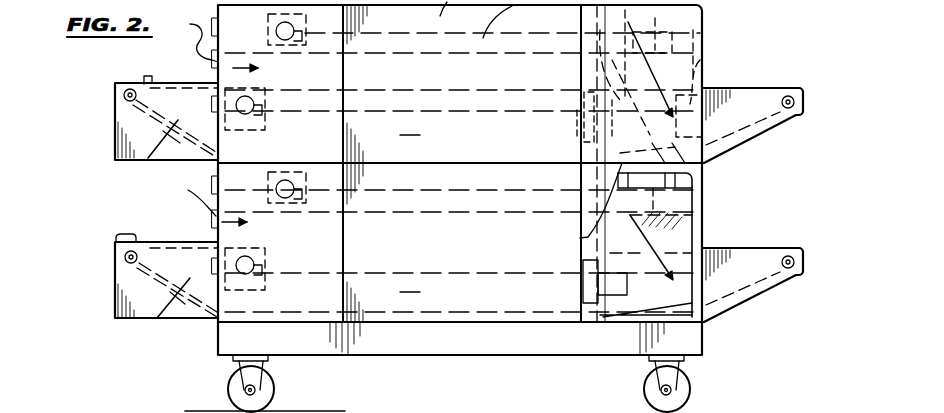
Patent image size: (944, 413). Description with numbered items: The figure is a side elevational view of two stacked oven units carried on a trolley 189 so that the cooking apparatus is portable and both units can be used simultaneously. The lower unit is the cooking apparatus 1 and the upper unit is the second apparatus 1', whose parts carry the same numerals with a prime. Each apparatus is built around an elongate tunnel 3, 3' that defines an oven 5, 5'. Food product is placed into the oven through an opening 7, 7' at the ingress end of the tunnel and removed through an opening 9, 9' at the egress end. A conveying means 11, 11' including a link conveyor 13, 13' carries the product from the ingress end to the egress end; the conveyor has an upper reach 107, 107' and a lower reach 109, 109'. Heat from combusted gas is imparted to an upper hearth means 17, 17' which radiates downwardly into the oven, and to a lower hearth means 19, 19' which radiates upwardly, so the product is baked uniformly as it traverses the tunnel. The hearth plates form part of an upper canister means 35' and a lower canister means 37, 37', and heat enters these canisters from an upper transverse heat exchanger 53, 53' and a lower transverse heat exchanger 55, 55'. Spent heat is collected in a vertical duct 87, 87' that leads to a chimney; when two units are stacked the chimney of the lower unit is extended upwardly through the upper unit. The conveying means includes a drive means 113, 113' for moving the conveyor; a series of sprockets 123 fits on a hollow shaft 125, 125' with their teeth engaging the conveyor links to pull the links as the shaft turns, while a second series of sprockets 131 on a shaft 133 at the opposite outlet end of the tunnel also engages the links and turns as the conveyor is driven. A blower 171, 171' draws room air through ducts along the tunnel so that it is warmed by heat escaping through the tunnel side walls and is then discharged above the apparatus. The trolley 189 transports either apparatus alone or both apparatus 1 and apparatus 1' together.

The cooking apparatus 1 is at (508, 163).
The second cooking apparatus unit 1' is at (798, 208).
The elongate tunnel 3 is at (209, 68).
The elongate tunnel of second unit 3' is at (202, 222).
The oven 5 is at (462, 75).
The oven of second unit 5' is at (462, 245).
The opening at ingress end 7 is at (198, 36).
The ingress opening of second unit 7' is at (194, 196).
The opening at egress end 9 is at (715, 65).
The egress opening of second unit 9' is at (673, 259).
The conveying means 11 is at (766, 125).
The conveying means of second unit 11' is at (768, 285).
The link conveyor 13 is at (783, 73).
The link conveyor of second unit 13' is at (765, 215).
The upper hearth means 17 is at (462, 57).
The upper hearth means of second unit 17' is at (462, 227).
The lower hearth means 19 is at (462, 85).
The lower hearth means of second unit 19' is at (462, 266).
The upper canister means of second unit 35' is at (462, 186).
The lower canister means 37 is at (436, 134).
The lower canister means of second unit 37' is at (440, 296).
The upper transverse heat exchanger 53 is at (295, 22).
The upper transverse heat exchanger of second unit 53' is at (284, 208).
The lower transverse heat exchanger 55 is at (266, 113).
The lower transverse heat exchanger of second unit 55' is at (269, 274).
The vertical duct 87 is at (681, 81).
The vertical duct of second unit 87' is at (664, 240).
The upper reach of conveyor 107 is at (112, 68).
The upper reach of second unit conveyor 107' is at (101, 240).
The lower reach of conveyor 109 is at (146, 158).
The lower reach of second unit conveyor 109' is at (163, 317).
The drive means 113 is at (132, 136).
The drive means of second unit 113' is at (132, 299).
The sprockets 123 is at (120, 90).
The hollow shaft 125 is at (131, 128).
The hollow shaft of second unit 125' is at (133, 284).
The second series of sprockets 131 is at (806, 98).
The shaft 133 is at (797, 112).
The blower 171 is at (560, 119).
The blower of second unit 171' is at (586, 326).
The trolley 189 is at (432, 356).